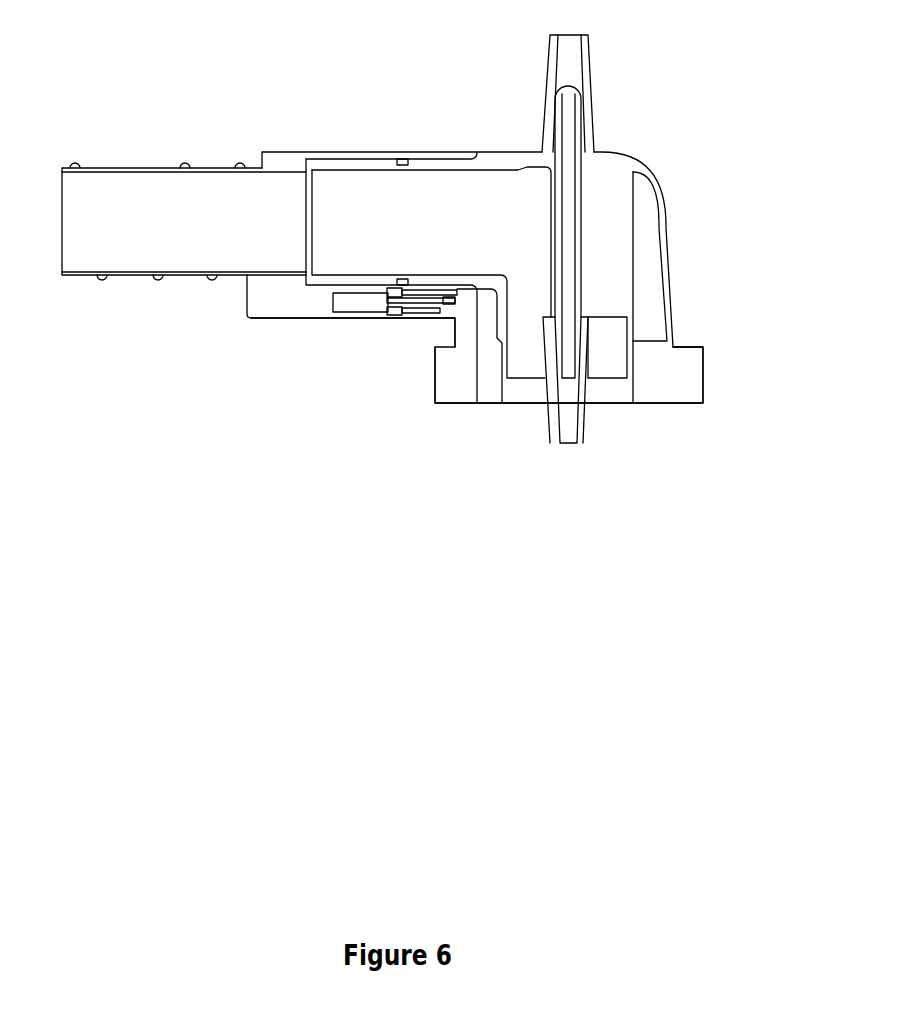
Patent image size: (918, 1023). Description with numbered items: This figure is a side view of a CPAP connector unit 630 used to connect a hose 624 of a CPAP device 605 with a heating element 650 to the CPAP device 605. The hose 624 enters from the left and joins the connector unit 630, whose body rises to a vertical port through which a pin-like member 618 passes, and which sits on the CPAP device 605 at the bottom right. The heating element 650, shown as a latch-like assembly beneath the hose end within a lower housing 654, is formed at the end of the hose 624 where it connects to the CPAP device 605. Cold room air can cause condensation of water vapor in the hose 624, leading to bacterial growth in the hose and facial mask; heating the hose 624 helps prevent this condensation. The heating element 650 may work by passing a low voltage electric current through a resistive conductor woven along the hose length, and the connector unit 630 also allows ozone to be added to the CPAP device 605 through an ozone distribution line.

The hose 624 is at (129, 190).
The needle 618 is at (578, 117).
The CPAP connector unit 630 is at (613, 227).
The heating element 650 is at (363, 314).
The housing 654 is at (449, 324).
The CPAP device 605 is at (665, 395).